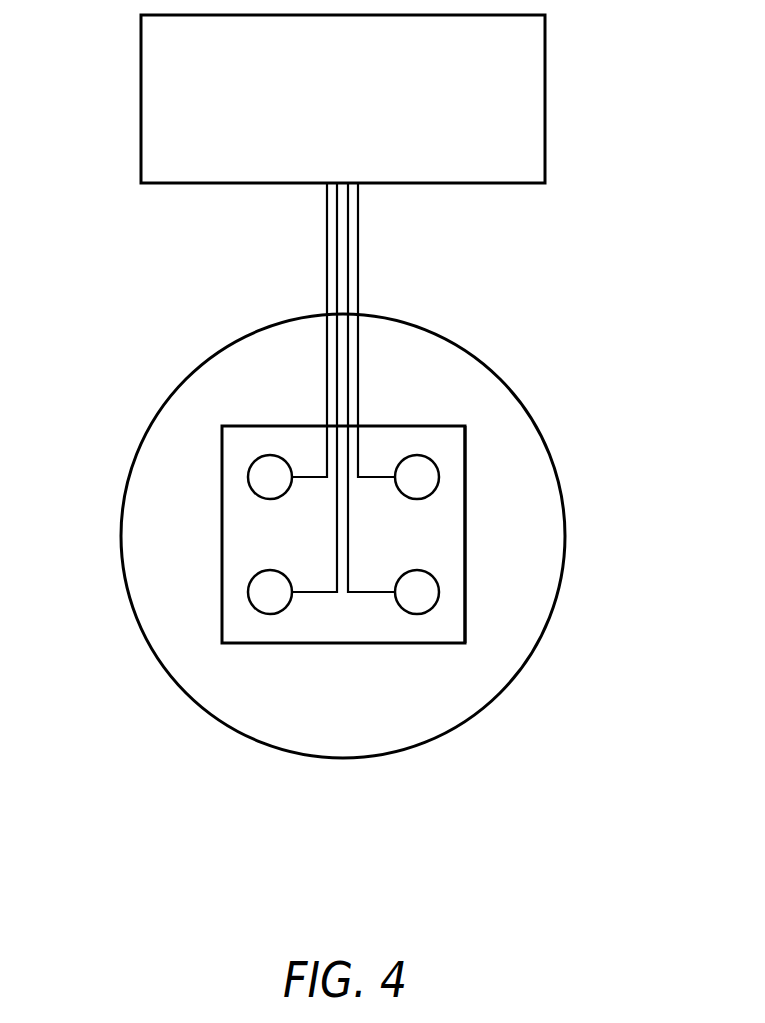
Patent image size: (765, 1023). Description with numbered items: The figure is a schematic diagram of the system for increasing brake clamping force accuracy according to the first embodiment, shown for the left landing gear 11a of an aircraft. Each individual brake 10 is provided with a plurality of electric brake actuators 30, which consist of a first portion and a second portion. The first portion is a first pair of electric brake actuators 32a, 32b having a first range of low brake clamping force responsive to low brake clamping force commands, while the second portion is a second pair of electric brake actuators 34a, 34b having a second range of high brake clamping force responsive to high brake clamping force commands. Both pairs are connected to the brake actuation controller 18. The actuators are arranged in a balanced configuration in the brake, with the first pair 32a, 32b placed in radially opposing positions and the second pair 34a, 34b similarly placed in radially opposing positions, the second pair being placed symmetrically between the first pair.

The brake actuation controller 18 is at (545, 98).
The left landing gear 11a is at (512, 321).
The electric brake actuators 30 is at (206, 537).
The brake 10 is at (465, 534).
The first pair of electric brake actuators 32a is at (248, 478).
The second pair of electric brake actuators 34a is at (439, 478).
The second pair of electric brake actuators 34b is at (248, 591).
The first pair of electric brake actuators 32b is at (439, 591).